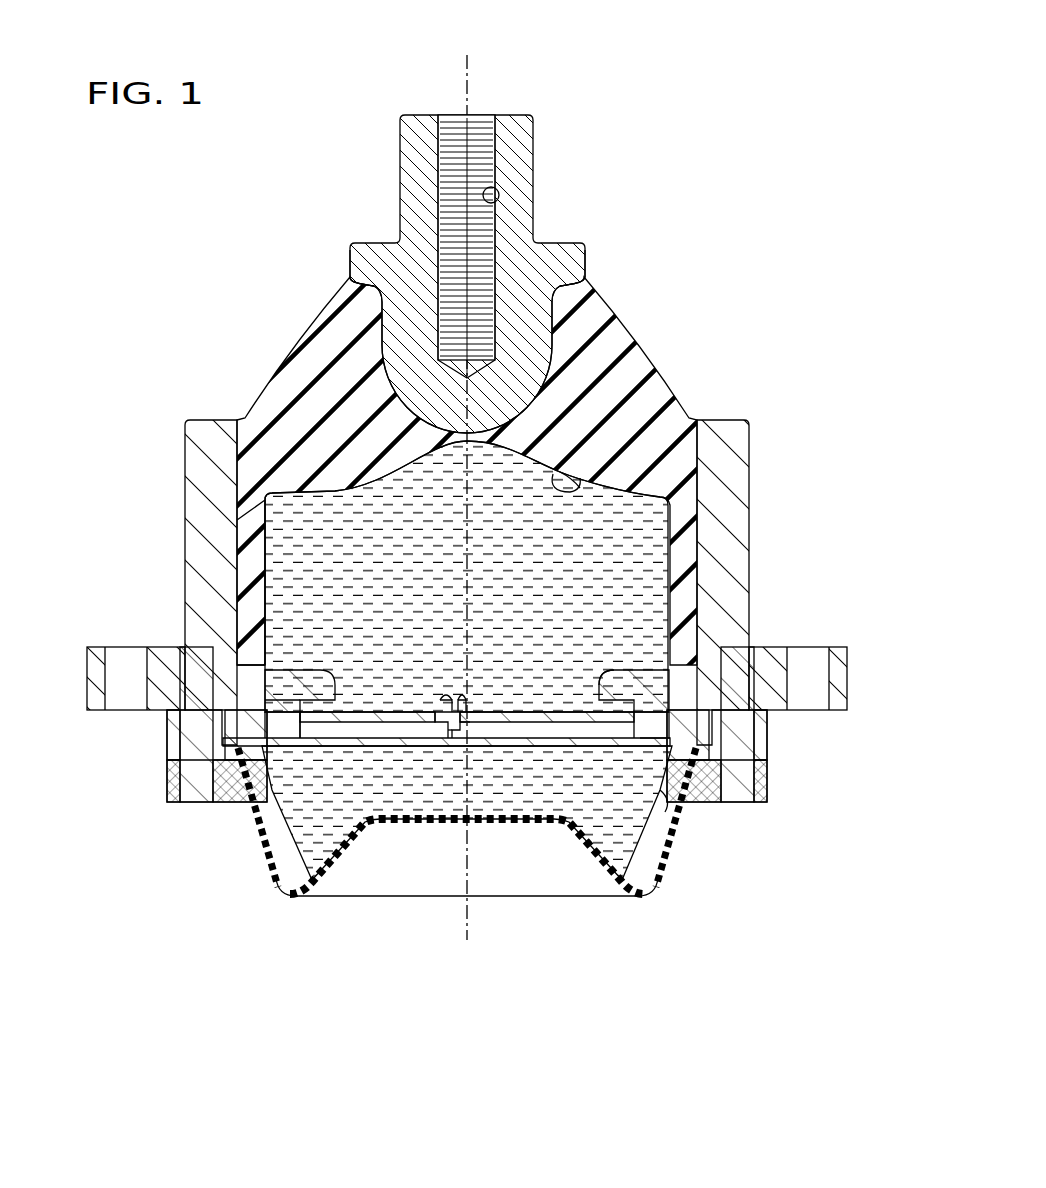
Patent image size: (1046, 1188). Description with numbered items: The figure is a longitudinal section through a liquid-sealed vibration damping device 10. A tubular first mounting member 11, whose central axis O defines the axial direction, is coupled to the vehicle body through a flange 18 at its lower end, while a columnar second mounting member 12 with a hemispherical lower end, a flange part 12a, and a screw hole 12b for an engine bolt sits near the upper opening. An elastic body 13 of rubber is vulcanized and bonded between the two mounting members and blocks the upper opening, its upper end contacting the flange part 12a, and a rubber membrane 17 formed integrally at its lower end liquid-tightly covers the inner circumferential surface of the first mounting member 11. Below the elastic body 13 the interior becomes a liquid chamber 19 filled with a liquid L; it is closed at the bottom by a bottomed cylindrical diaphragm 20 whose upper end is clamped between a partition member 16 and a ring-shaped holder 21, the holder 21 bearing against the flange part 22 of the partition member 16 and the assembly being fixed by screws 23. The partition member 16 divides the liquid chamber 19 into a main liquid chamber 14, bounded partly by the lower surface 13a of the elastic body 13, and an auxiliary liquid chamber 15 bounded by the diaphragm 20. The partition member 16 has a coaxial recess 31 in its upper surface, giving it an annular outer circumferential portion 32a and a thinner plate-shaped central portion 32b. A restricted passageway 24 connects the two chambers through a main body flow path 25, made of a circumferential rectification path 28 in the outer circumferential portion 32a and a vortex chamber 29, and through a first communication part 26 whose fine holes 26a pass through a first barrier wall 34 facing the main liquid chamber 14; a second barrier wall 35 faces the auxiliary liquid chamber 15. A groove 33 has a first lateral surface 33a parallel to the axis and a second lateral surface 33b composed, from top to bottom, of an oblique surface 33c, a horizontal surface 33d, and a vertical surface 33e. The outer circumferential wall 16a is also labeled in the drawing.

The vibration damping device 10 is at (727, 108).
The first mounting member 11 is at (768, 628).
The second mounting member 12 is at (522, 163).
The flange part 12a is at (586, 270).
The screw hole 12b is at (499, 199).
The elastic body 13 is at (622, 345).
The lower surface of the elastic body 13a is at (583, 490).
The main liquid chamber 14 is at (435, 561).
The auxiliary liquid chamber 15 is at (387, 770).
The partition member 16 is at (641, 672).
The outer peripheral wall 16a is at (237, 748).
The rubber membrane 17 is at (245, 605).
The flange 18 is at (97, 673).
The liquid chamber 19 is at (330, 545).
The diaphragm 20 is at (428, 828).
The holder 21 is at (170, 798).
The flange part 22 is at (170, 727).
The screws 23 is at (193, 772).
The restricted passageway 24 is at (282, 698).
The main body flow path 25 is at (305, 955).
The first communication part 26 is at (438, 858).
The fine holes 26a is at (432, 737).
The rectification path 28 is at (287, 718).
The vortex chamber 29 is at (308, 733).
The recess 31 is at (648, 662).
The outer circumferential portion 32a is at (300, 675).
The central portion 32b is at (638, 735).
The groove 33 is at (487, 730).
The first lateral surface 33a is at (437, 690).
The second lateral surface 33b is at (650, 995).
The oblique surface 33c is at (480, 712).
The horizontal surface 33d is at (470, 722).
The vertical surface 33e is at (455, 733).
The first barrier wall 34 is at (458, 706).
The second barrier wall 35 is at (662, 805).
The liquid L is at (643, 532).
The central axis O is at (467, 82).